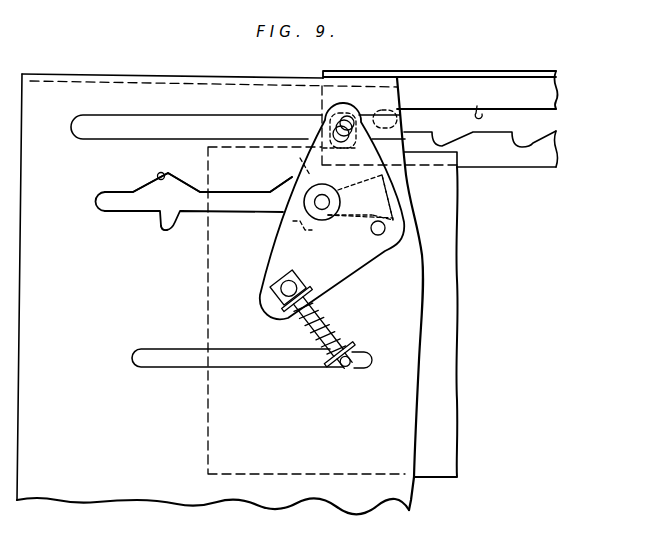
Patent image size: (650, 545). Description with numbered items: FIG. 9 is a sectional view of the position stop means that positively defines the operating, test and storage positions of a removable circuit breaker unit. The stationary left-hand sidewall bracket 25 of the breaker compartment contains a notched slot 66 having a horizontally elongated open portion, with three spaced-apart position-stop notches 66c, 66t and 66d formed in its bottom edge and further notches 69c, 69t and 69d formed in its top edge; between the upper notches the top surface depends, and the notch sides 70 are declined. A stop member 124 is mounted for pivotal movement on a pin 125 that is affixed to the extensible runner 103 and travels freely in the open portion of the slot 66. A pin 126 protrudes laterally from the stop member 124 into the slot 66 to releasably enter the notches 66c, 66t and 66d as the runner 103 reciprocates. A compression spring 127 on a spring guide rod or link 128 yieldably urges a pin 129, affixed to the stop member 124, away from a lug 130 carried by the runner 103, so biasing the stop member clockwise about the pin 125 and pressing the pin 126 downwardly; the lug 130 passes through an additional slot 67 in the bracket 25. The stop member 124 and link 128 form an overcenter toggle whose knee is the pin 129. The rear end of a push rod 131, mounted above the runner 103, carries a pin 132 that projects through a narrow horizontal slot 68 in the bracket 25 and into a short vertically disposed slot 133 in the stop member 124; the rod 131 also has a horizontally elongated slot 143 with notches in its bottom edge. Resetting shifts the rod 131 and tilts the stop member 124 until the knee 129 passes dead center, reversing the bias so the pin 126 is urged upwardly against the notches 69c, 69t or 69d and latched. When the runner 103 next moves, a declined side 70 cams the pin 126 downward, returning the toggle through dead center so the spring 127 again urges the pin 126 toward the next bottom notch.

The left-hand sidewall bracket 25 is at (98, 87).
The notched slot 66 is at (103, 206).
The notch 66c is at (162, 229).
The notch 66d is at (372, 236).
The notch 66t is at (292, 230).
The additional slot 67 is at (162, 364).
The narrow horizontal slot 68 is at (150, 126).
The notch 69c is at (157, 176).
The notch 69d is at (377, 197).
The notch 69t is at (302, 159).
The declined notch side 70 is at (146, 182).
The runner 103 is at (447, 424).
The stop member 124 is at (357, 266).
The pin 125 is at (315, 203).
The pin 126 is at (385, 228).
The compression spring 127 is at (305, 320).
The spring guide rod or link 128 is at (335, 322).
The pin 129 is at (284, 285).
The lug 130 is at (345, 372).
The push rod or bar 131 is at (508, 89).
The pin 132 is at (338, 128).
The vertically disposed slot 133 is at (347, 125).
The horizontally elongated slot 143 is at (476, 104).